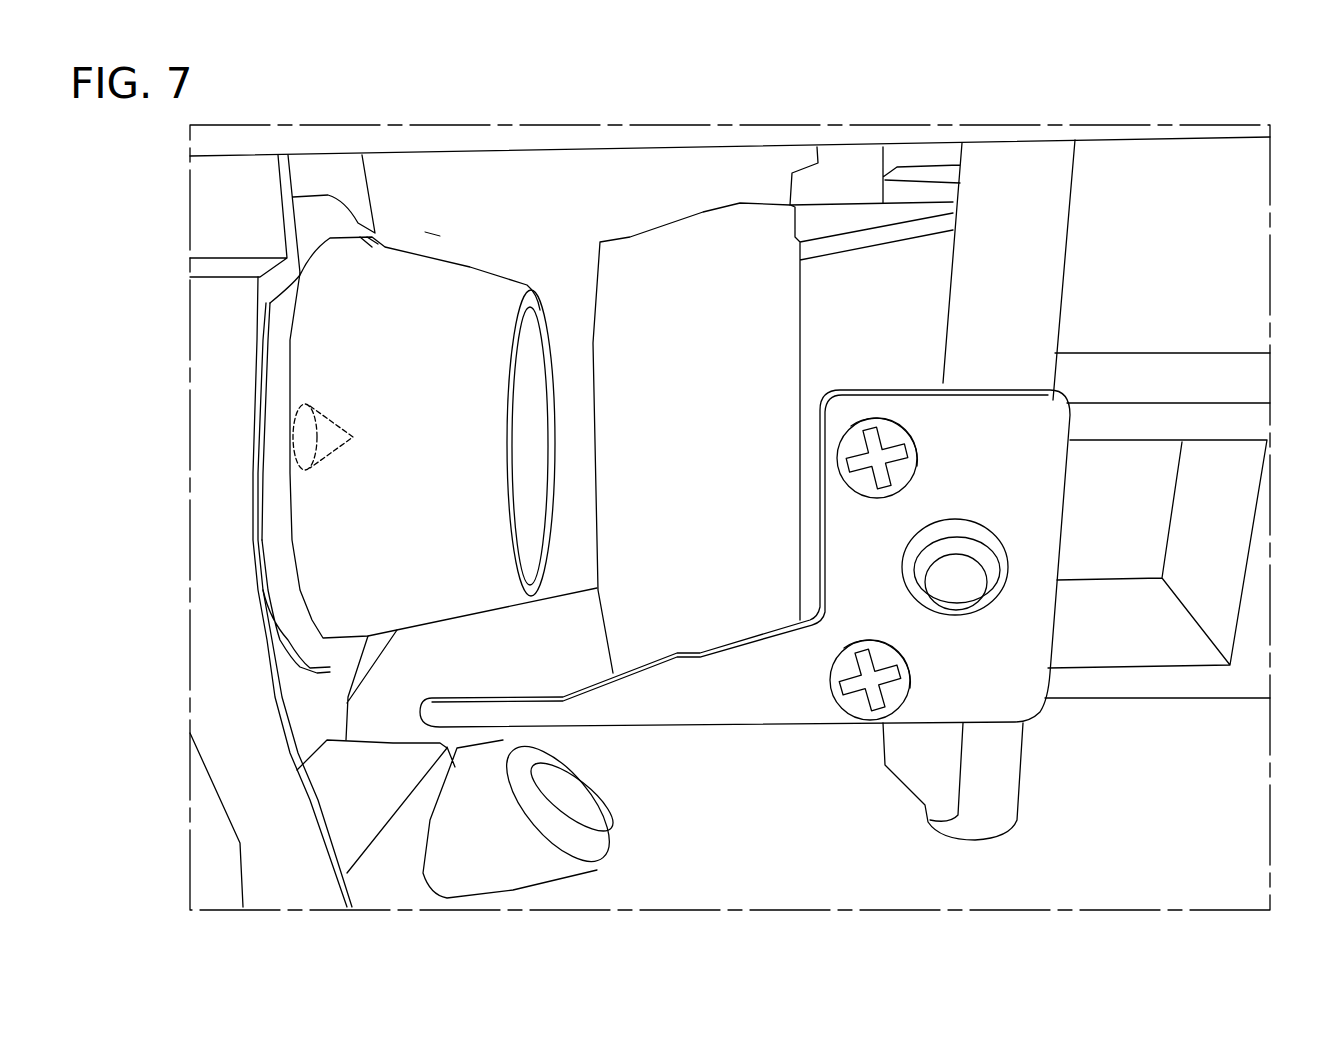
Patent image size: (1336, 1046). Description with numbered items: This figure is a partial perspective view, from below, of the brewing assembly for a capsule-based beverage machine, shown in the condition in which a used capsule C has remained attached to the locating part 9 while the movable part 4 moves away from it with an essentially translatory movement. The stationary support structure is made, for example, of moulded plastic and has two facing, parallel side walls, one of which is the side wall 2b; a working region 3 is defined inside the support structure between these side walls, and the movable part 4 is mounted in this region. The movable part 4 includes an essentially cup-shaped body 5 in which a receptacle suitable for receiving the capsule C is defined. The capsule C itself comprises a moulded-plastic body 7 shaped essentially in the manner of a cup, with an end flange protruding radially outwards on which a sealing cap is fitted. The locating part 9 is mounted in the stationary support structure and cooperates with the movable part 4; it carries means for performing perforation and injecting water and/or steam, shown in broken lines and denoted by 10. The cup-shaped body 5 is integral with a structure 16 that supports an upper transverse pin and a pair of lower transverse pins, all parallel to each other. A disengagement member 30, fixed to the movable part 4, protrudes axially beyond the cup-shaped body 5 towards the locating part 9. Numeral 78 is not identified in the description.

The capsule C is at (421, 224).
The body 7 is at (467, 263).
The side wall 2b is at (579, 156).
The working region 3 is at (553, 236).
The cup-shaped body 5 is at (650, 437).
The disengagement member 30 is at (692, 690).
The movable part 4 is at (755, 184).
The means for performing perforation and injecting water and/or steam 10 is at (329, 412).
The rim 78 is at (330, 657).
The locating part 9 is at (307, 737).
The structure 16 is at (1257, 610).